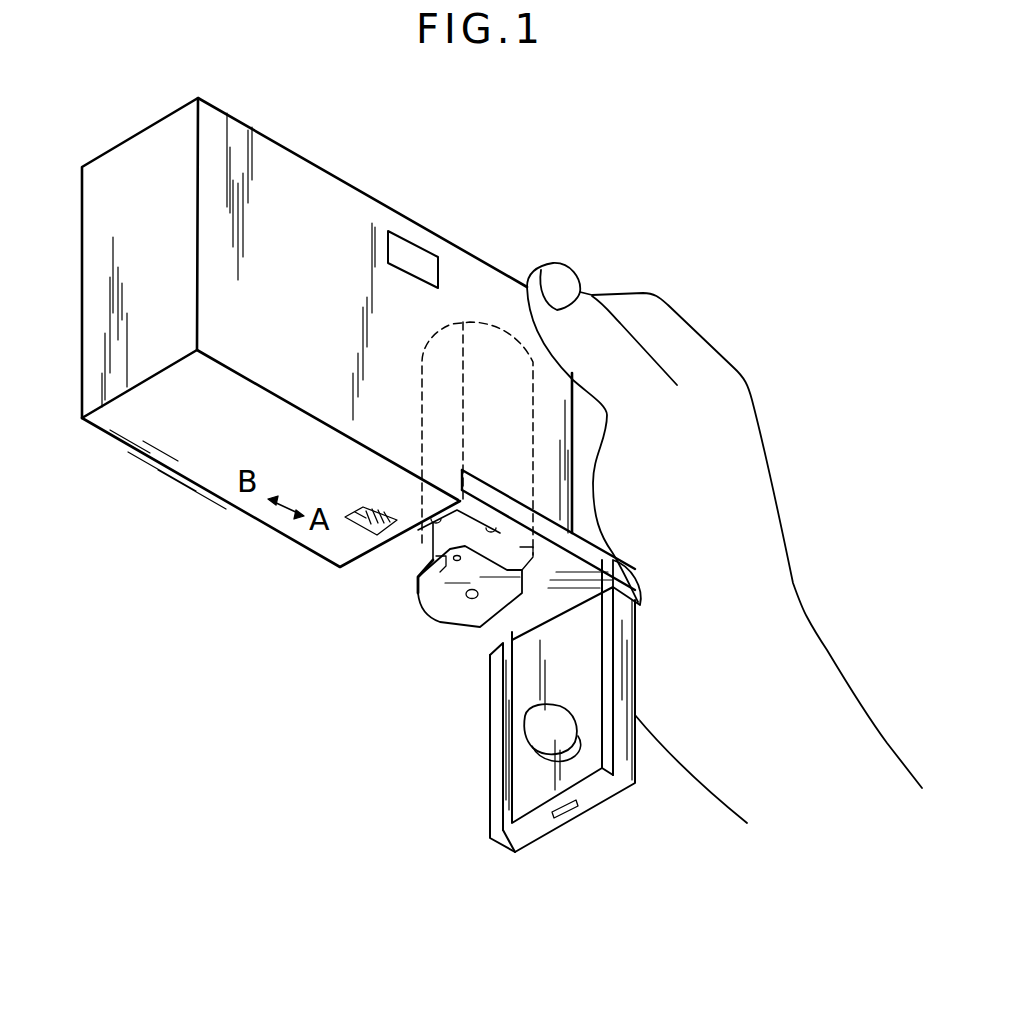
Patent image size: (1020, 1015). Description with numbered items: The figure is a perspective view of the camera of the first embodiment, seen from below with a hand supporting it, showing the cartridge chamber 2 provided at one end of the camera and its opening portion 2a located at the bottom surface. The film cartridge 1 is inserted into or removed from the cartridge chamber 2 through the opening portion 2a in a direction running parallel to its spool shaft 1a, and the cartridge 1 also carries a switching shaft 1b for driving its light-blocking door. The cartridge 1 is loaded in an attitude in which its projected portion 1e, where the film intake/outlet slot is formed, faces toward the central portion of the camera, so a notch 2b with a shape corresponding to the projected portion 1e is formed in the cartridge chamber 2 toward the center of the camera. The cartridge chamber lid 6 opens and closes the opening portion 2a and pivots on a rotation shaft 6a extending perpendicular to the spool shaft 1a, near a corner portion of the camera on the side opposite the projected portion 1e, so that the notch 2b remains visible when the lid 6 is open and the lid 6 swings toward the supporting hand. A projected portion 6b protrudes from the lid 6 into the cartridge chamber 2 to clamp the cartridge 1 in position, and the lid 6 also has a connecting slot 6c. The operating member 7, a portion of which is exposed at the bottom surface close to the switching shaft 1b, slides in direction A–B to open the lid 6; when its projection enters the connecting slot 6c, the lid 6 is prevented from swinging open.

The film cartridge 1 is at (438, 614).
The spool shaft 1a is at (470, 600).
The switching shaft 1b is at (420, 575).
The projected portion 1e is at (443, 557).
The cartridge chamber 2 is at (485, 330).
The opening portion 2a is at (492, 522).
The notch 2b is at (428, 520).
The cartridge chamber lid 6 is at (492, 830).
The rotation shaft 6a is at (636, 590).
The projected portion 6b is at (530, 727).
The connecting slot 6c is at (565, 815).
The operating member 7 is at (370, 535).